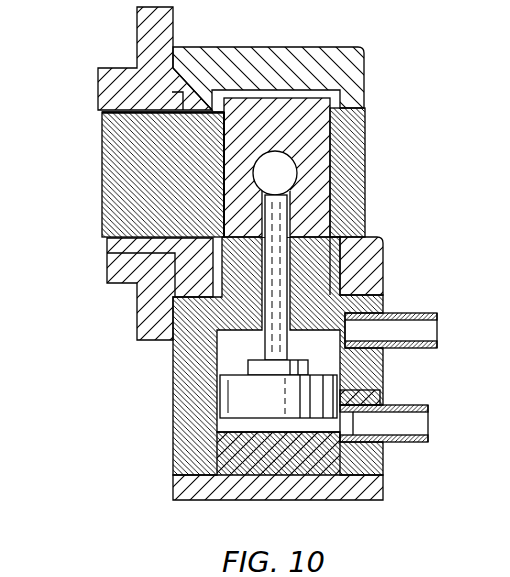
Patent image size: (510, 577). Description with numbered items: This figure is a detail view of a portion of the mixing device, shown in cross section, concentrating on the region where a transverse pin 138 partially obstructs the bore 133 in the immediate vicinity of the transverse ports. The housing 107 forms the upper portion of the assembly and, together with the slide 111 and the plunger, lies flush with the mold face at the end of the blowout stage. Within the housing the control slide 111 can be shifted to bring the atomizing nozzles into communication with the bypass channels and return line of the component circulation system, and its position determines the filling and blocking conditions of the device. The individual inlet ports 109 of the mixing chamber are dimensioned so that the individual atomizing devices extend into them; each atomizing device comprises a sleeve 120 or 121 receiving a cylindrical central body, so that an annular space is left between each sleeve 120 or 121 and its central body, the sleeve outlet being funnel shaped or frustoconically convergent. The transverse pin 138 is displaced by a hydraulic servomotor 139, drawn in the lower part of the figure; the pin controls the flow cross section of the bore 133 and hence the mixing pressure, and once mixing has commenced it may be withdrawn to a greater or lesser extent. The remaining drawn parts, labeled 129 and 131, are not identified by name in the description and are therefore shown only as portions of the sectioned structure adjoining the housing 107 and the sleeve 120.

The housing 107 is at (333, 80).
The actuating post 129 is at (109, 83).
The seal 131 is at (225, 175).
The sleeve 120 is at (118, 217).
The inlet port 109 is at (176, 251).
The control slide 111 is at (313, 125).
The bore 133 is at (285, 174).
The sleeve 121 is at (365, 203).
The transverse pin 138 is at (287, 253).
The hydraulic servomotor 139 is at (366, 393).